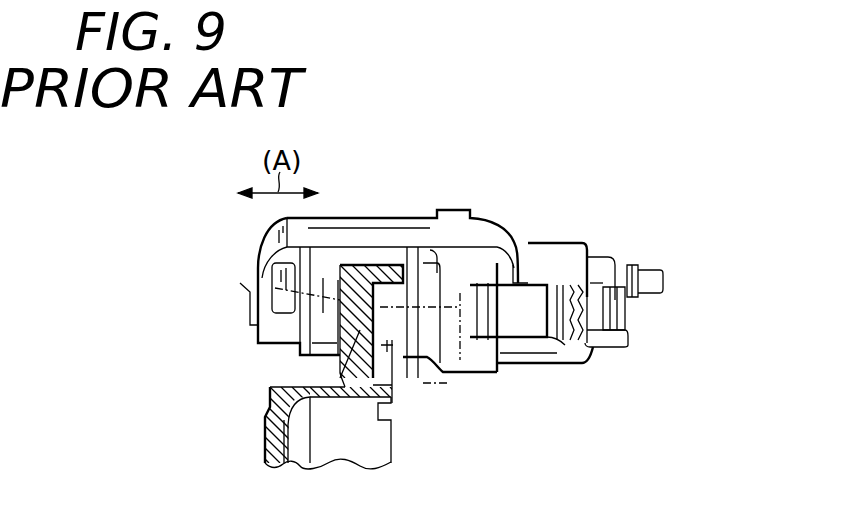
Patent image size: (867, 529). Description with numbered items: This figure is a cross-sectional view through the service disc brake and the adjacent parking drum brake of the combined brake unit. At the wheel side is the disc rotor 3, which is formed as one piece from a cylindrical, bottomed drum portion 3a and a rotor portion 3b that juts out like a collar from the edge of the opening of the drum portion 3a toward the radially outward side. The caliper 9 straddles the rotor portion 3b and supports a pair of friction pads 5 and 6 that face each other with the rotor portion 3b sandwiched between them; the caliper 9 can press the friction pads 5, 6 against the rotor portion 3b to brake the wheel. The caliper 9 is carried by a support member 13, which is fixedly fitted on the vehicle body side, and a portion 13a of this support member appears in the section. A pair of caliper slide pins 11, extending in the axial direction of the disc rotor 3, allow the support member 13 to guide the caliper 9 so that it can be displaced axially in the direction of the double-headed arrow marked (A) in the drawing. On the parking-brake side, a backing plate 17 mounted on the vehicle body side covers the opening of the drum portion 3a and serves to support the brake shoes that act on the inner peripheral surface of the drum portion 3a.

The disc rotor 3 is at (162, 390).
The cylindrical drum portion 3a is at (267, 442).
The rotor portion 3b is at (340, 358).
The friction pad 5 is at (398, 374).
The friction pad 6 is at (323, 278).
The caliper 9 is at (400, 238).
The caliper slide pin 11 is at (617, 310).
The support member 13 is at (475, 373).
The piston 13a is at (521, 332).
The backing plate 17 is at (405, 408).